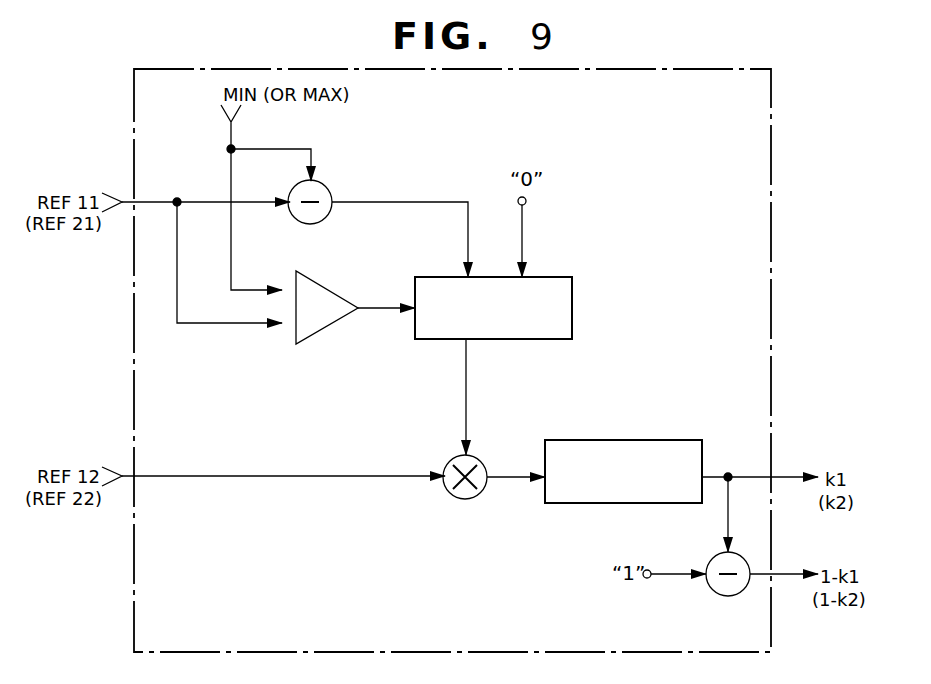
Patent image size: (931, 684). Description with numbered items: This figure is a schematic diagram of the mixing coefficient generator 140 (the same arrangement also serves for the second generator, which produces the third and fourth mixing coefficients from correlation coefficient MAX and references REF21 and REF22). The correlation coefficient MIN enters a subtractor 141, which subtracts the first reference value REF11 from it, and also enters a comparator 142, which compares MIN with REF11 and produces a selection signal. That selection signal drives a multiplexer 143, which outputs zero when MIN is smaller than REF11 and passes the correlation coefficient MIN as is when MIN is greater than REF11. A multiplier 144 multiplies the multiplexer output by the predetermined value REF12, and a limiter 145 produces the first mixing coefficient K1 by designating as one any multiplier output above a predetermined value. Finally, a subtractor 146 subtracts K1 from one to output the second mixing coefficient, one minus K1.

The mixing coefficient generator 140 is at (740, 70).
The subtractor 141 is at (328, 185).
The comparator 142 is at (335, 285).
The multiplexer 143 is at (572, 277).
The multiplier 144 is at (452, 496).
The limiter 145 is at (706, 440).
The subtractor 146 is at (711, 592).